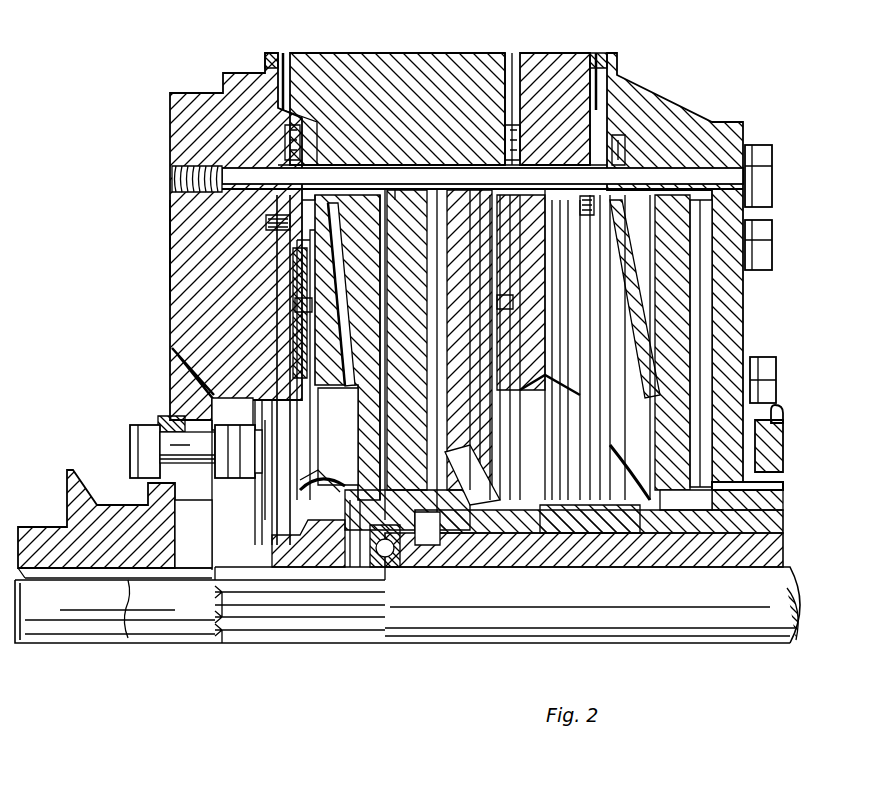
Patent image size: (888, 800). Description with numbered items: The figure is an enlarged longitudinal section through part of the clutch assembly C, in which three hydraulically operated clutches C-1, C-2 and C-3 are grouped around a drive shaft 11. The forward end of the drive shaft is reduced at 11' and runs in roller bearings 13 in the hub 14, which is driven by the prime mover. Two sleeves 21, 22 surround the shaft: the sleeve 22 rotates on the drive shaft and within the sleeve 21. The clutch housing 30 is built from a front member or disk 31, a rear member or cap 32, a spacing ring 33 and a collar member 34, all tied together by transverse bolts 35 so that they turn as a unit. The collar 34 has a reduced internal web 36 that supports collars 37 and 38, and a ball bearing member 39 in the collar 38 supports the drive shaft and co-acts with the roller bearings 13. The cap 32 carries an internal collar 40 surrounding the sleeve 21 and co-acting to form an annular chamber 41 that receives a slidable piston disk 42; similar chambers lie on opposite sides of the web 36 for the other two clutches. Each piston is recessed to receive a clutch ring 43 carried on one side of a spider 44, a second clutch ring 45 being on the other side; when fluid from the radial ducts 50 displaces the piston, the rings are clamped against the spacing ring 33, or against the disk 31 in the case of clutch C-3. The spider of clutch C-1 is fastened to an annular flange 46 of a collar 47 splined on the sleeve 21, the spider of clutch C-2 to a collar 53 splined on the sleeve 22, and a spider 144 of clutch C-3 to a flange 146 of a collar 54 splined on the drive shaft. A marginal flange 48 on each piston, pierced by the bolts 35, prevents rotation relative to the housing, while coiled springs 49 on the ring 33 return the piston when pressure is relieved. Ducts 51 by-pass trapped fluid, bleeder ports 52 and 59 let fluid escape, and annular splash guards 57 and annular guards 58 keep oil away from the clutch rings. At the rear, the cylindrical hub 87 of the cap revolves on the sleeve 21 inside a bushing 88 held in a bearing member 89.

The drive shaft 11 is at (407, 623).
The reduced end of drive shaft 11' is at (120, 641).
The roller bearings 13 is at (122, 638).
The hub 14 is at (108, 492).
The sleeve 21 is at (786, 526).
The sleeve 22 is at (786, 556).
The housing 30 is at (172, 124).
The front member or disk 31 is at (172, 232).
The rear member or cap 32 is at (722, 124).
The spacing ring 33 is at (562, 52).
The collar member 34 is at (350, 54).
The transverse bolts 35 is at (170, 180).
The internal annular web 36 is at (376, 268).
The collar 37 is at (442, 482).
The collar 38 is at (359, 474).
The ball bearing member 39 is at (398, 564).
The internal collar 40 is at (686, 564).
The annular chamber 41 is at (394, 172).
The piston disk 42 is at (286, 266).
The clutch ring 43 is at (324, 292).
The spider 44 is at (506, 406).
The clutch ring 45 is at (280, 334).
The annular flange 46 is at (554, 437).
The collar 47 is at (572, 504).
The marginal flange 48 is at (674, 182).
The coiled springs 49 is at (580, 208).
The radial ducts 50 is at (775, 240).
The ducts 51 is at (652, 290).
The bleeder ports 52 is at (278, 54).
The collar 53 is at (484, 558).
The collar 54 is at (306, 602).
The annular splash guards 57 is at (346, 488).
The annular guards 58 is at (288, 132).
The bleeder ports 59 is at (177, 366).
The cylindrical hub 87 is at (768, 476).
The bushing 88 is at (786, 446).
The bearing member 89 is at (786, 416).
The spider 144 is at (268, 382).
The flange 146 is at (328, 434).
The clutch assembly C is at (170, 274).
The clutch C-1 is at (694, 188).
The clutch C-2 is at (445, 188).
The clutch C-3 is at (324, 196).